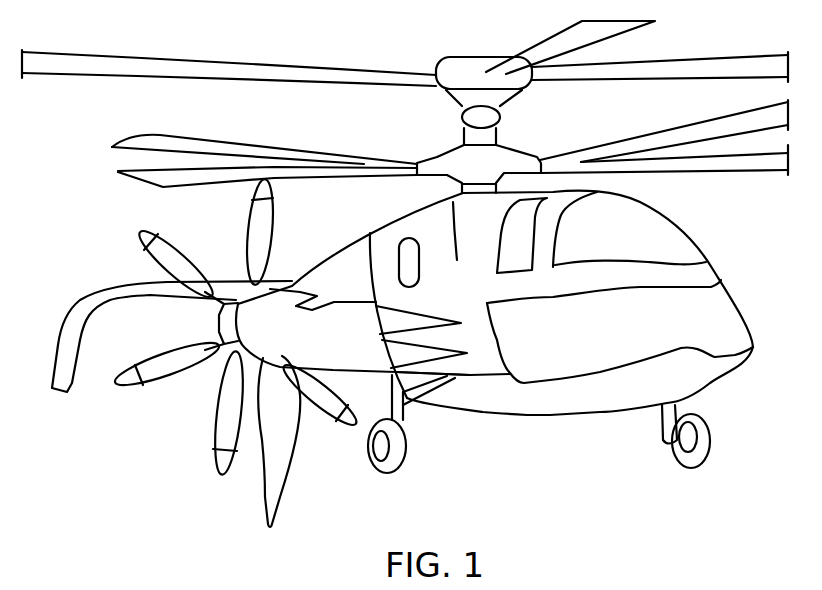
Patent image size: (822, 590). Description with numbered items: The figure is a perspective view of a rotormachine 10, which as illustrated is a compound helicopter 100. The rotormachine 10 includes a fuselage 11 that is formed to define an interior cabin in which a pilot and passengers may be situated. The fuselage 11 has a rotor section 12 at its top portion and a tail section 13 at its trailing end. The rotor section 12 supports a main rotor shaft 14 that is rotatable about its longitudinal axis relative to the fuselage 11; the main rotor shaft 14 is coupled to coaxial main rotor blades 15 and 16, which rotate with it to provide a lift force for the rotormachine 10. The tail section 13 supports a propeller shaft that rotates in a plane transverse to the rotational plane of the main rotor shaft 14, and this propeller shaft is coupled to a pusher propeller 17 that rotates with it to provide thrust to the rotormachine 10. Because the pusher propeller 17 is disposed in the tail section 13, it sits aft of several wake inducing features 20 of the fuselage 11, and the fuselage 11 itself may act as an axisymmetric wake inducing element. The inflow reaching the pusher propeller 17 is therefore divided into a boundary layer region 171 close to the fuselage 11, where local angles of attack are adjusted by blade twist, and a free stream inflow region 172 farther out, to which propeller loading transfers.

The rotormachine 10 is at (494, 337).
The compound helicopter 100 is at (548, 422).
The fuselage 11 is at (515, 402).
The rotor section 12 is at (467, 222).
The tail section 13 is at (281, 356).
The main rotor shaft 14 is at (491, 115).
The main rotor blade 15 is at (147, 72).
The main rotor blade 16 is at (114, 148).
The pusher propeller 17 is at (236, 352).
The boundary layer region 171 is at (217, 353).
The free stream inflow region 172 is at (142, 341).
The wake inducing features 20 is at (462, 160).